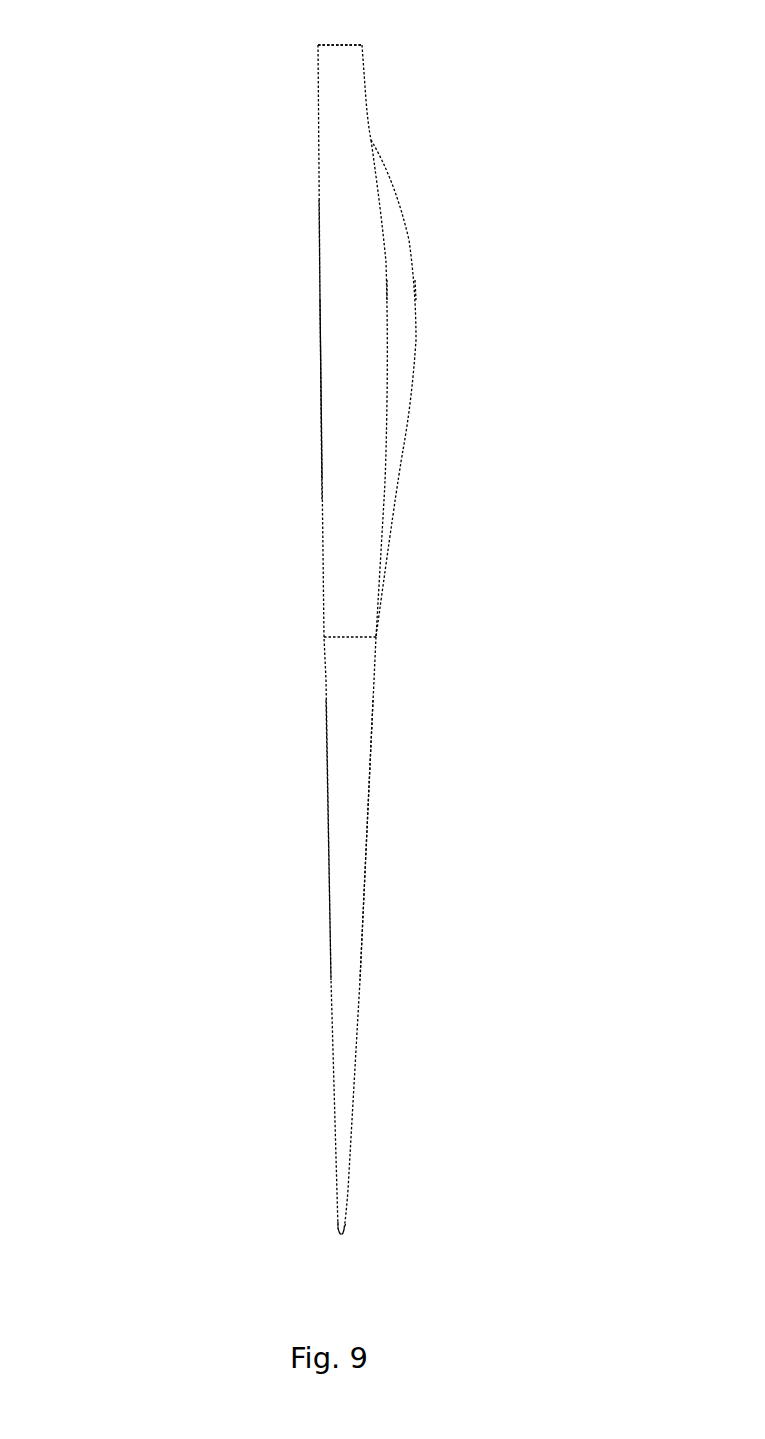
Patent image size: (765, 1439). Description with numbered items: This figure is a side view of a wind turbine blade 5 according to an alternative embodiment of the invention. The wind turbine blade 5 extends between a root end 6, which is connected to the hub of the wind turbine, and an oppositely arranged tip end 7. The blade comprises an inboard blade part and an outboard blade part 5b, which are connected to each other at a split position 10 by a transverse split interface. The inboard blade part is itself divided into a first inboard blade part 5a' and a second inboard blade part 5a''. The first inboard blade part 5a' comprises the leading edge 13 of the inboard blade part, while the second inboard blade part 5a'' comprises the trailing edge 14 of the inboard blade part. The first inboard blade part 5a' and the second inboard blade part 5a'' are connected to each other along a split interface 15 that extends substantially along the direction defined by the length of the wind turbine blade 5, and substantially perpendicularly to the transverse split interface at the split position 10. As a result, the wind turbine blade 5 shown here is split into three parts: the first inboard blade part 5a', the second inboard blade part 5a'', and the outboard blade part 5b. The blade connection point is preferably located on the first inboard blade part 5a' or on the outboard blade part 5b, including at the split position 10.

The wind turbine blade 5 is at (137, 211).
The root end 6 is at (340, 45).
The tip end 7 is at (343, 1237).
The split position 10 is at (362, 636).
The leading edge 13 is at (320, 386).
The trailing edge 14 is at (416, 340).
The split interface 15 is at (384, 262).
The first inboard blade part 5a' is at (258, 350).
The second inboard blade part 5a'' is at (448, 289).
The outboard blade part 5b is at (349, 830).